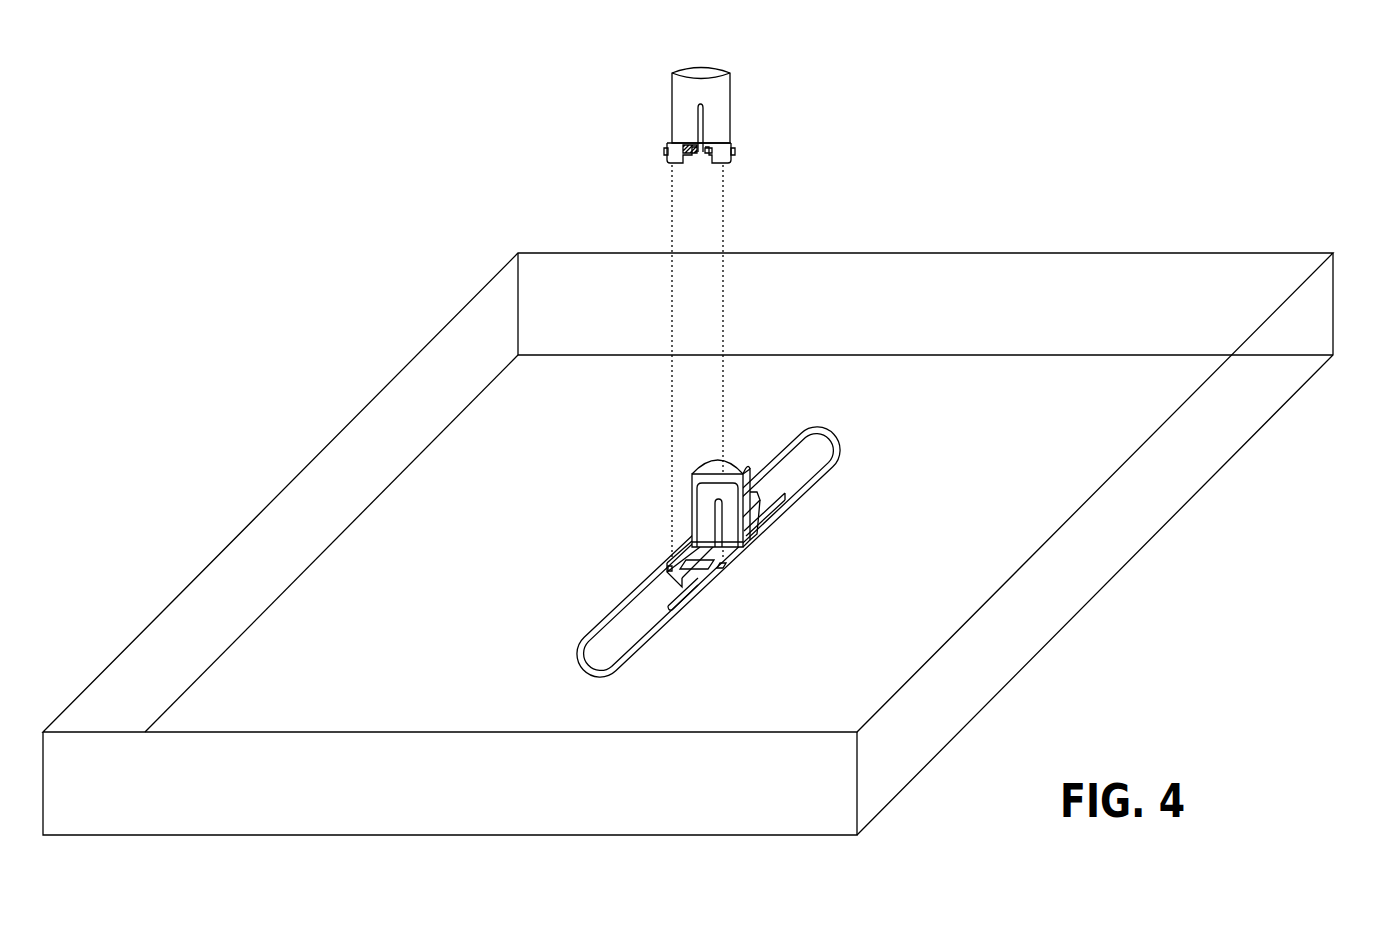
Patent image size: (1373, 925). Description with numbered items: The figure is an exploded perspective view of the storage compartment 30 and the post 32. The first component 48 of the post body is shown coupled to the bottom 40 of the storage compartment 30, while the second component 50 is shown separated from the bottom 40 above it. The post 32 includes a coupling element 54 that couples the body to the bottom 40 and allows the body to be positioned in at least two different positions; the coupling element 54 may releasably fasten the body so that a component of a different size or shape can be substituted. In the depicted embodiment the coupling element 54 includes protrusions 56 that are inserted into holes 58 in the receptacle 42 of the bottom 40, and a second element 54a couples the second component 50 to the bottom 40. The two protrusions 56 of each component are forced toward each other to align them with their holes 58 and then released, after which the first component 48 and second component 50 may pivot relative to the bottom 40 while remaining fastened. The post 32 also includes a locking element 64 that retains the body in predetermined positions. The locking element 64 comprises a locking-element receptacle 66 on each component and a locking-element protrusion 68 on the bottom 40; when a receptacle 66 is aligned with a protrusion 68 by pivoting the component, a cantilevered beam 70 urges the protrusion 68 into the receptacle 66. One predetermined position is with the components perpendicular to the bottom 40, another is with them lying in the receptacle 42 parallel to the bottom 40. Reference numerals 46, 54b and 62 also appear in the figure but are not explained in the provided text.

The storage compartment 30 is at (378, 250).
The post 32 is at (696, 345).
The bottom 40 is at (272, 710).
The receptacle 42 is at (613, 655).
The cavity 46 is at (403, 520).
The first component 48 is at (737, 470).
The second component 50 is at (703, 66).
The coupling element 54 is at (600, 123).
The second element 54a is at (625, 145).
The second bracket 54b is at (678, 538).
The protrusion 56 is at (666, 150).
The hole 58 is at (668, 568).
The housing wall 62 is at (1300, 251).
The locking element 64 is at (660, 163).
The locking-element receptacle 66 is at (707, 148).
The locking-element protrusion 68 is at (697, 568).
The cantilevered beam 70 is at (675, 597).